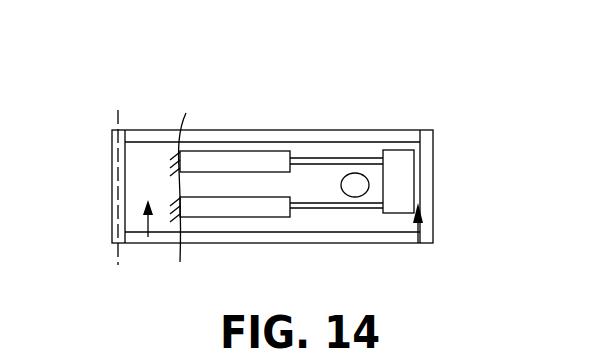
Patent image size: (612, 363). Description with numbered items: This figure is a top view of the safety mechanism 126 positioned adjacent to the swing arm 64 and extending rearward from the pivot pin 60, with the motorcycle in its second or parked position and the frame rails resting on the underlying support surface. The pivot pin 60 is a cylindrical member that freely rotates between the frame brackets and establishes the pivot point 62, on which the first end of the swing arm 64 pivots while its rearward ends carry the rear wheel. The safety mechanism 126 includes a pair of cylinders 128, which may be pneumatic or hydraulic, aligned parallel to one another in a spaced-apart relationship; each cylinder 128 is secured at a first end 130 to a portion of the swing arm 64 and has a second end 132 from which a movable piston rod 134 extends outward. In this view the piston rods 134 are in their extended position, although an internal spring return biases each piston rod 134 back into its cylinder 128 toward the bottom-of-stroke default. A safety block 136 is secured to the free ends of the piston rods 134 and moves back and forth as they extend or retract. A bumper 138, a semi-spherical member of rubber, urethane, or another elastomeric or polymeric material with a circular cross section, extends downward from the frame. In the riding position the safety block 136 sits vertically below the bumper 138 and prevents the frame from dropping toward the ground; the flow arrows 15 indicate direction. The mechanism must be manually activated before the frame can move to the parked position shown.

The pivot pin 60 is at (96, 176).
The pivot point 62 is at (118, 126).
The swing arm 64 is at (352, 130).
The fluid flow direction 15 is at (283, 212).
The safety mechanism 126 is at (408, 56).
The cylinders 128 is at (202, 197).
The first end 130 is at (197, 191).
The second end 132 is at (300, 155).
The piston rod 134 is at (318, 160).
The safety block 136 is at (402, 150).
The bumper 138 is at (363, 197).